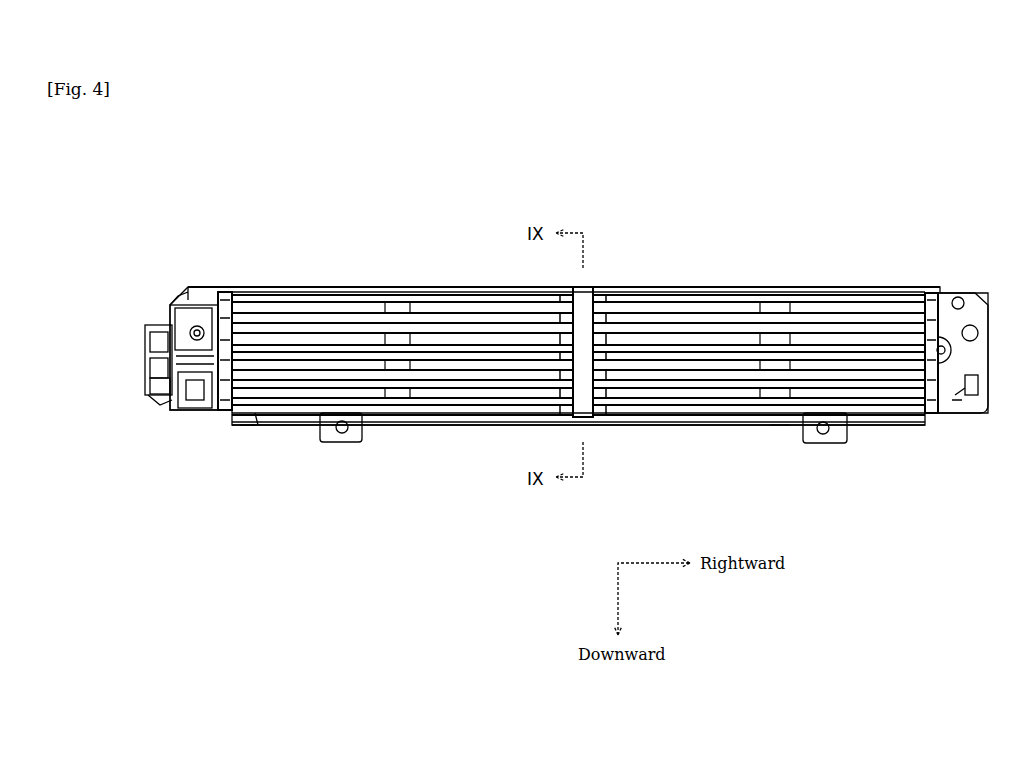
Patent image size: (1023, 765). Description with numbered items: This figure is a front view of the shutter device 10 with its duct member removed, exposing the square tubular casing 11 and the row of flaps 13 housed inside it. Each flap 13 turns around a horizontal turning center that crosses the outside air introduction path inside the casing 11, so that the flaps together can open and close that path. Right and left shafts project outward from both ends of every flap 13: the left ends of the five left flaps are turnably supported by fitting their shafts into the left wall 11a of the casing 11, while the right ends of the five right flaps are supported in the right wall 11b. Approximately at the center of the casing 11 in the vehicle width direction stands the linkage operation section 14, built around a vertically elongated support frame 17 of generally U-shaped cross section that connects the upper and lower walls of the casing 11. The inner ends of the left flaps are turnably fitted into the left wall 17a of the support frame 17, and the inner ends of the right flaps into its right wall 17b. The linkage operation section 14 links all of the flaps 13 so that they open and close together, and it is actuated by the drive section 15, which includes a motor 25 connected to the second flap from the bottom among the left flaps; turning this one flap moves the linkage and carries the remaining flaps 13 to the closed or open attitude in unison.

The shutter device 10 is at (782, 236).
The casing 11 is at (688, 288).
The left wall 11a is at (250, 293).
The right wall 11b is at (918, 292).
The flap 13 is at (270, 415).
The linkage operation section 14 is at (603, 437).
The drive section 15 is at (140, 370).
The support frame 17 is at (565, 390).
The left wall of support frame 17a is at (538, 288).
The right wall of support frame 17b is at (615, 288).
The motor 25 is at (150, 392).